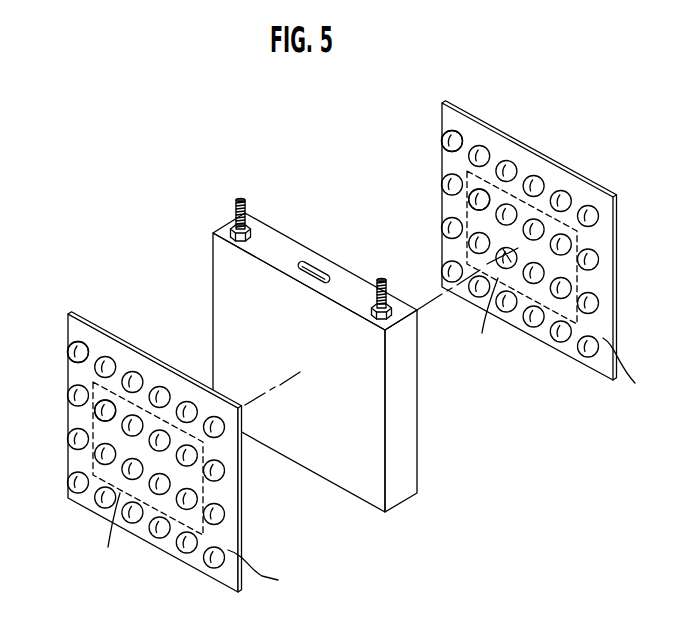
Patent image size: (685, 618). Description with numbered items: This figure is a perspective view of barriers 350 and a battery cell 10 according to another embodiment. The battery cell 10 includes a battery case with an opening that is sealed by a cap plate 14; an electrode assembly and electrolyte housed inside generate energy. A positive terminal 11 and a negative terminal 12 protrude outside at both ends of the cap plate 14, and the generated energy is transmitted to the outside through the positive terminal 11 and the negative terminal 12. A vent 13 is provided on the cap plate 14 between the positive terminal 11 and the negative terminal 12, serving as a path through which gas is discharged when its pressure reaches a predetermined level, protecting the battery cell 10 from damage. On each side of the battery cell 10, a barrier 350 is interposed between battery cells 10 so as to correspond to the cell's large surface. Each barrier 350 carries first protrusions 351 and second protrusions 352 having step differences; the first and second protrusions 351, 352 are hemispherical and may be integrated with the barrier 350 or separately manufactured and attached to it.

The battery cell 10 is at (223, 220).
The positive terminal 11 is at (243, 199).
The negative terminal 12 is at (382, 280).
The vent 13 is at (308, 265).
The cap plate 14 is at (268, 240).
The barrier 350 is at (65, 303).
The first protrusion 351 is at (100, 413).
The second protrusion 352 is at (71, 357).